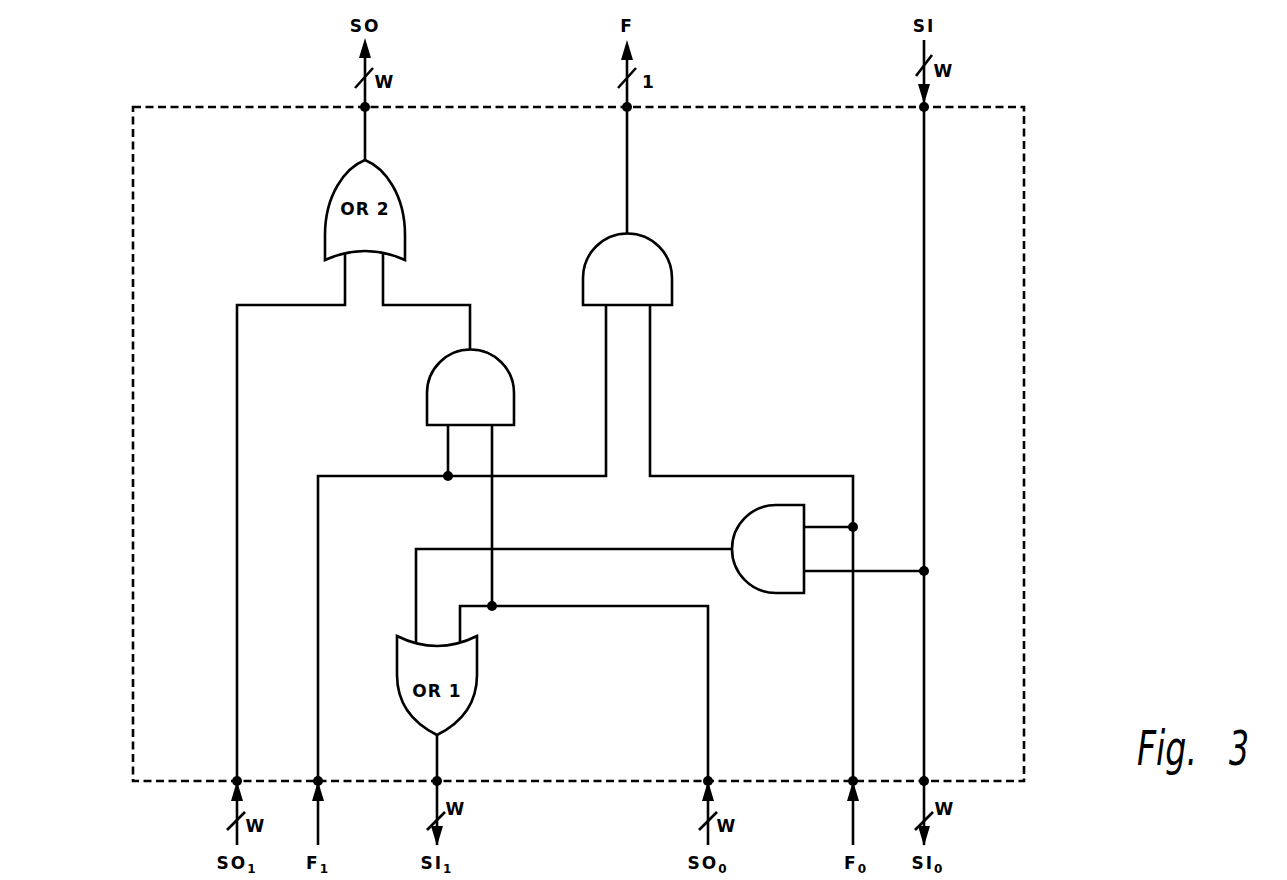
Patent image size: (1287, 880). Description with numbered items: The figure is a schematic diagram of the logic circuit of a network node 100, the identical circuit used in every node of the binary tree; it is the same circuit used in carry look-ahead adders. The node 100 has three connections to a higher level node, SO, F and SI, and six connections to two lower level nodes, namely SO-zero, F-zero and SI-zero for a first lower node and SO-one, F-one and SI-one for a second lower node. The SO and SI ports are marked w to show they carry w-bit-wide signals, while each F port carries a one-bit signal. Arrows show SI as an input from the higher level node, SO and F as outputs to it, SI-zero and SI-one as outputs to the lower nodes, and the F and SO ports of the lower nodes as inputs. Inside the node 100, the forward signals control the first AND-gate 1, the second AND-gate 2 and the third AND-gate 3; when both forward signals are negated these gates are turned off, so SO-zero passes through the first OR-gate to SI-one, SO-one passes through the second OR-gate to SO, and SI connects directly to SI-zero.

The network node 100 is at (1023, 303).
The AND-gate AND1 1 is at (768, 549).
The AND-gate AND2 2 is at (470, 388).
The AND-gate AND3 3 is at (627, 270).